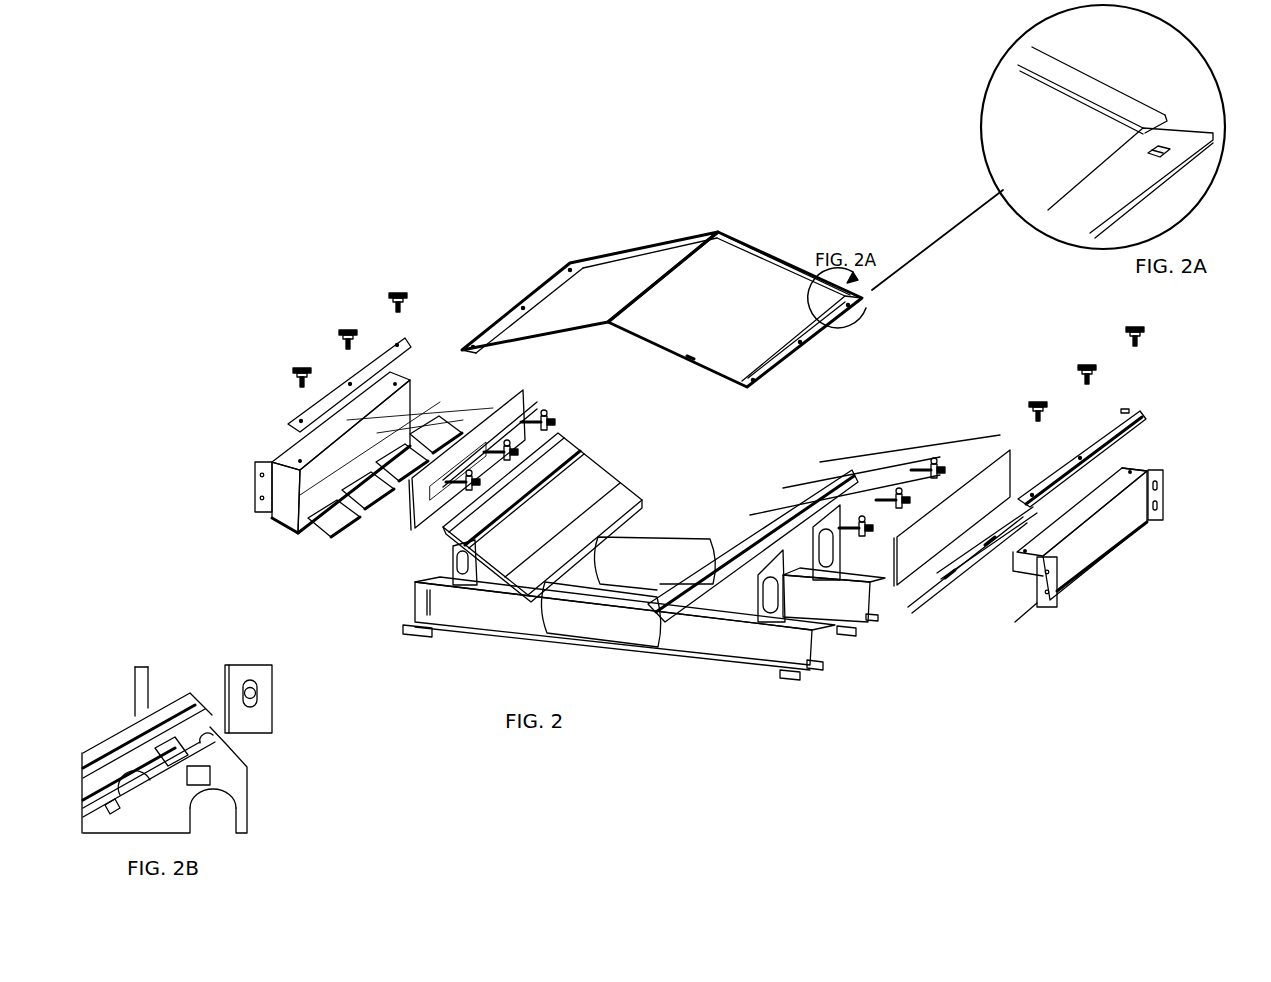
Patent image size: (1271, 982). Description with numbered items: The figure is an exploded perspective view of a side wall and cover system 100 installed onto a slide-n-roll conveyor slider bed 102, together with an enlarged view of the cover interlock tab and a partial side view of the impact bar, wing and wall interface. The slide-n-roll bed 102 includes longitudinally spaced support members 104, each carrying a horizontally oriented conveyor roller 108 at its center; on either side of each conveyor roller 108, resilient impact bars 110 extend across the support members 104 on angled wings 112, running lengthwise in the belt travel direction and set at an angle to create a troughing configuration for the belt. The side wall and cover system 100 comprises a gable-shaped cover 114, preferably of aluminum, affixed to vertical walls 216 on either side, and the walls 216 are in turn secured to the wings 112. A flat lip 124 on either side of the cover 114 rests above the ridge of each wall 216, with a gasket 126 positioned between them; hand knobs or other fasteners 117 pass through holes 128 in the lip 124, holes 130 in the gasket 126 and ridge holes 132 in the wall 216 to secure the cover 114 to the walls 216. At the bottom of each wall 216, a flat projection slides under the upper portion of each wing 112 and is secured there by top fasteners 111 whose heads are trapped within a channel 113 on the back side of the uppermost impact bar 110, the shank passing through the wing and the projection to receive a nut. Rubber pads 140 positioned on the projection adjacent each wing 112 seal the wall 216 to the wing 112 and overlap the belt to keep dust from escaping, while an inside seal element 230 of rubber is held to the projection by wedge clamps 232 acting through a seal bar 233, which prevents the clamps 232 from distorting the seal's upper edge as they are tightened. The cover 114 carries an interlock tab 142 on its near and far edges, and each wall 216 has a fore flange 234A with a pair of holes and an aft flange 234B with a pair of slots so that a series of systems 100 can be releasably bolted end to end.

In FIG. 2, the side wall and cover system 100 is at (878, 374).
In FIG. 2, the slide-n-roll conveyor slider bed 102 is at (848, 658).
In FIG. 2, the support members 104 is at (703, 660).
In FIG. 2, the conveyor roller 108 is at (587, 608).
In FIG. 2, the impact bars 110 is at (617, 500).
In FIG. 2B, the top bolts or fasteners 111 is at (210, 780).
In FIG. 2, the angled wings 112 is at (453, 563).
In FIG. 2B, the channel 113 is at (188, 728).
In FIG. 2, the cover 114 is at (557, 280).
In FIG. 2, the hand knobs or fasteners 117 is at (398, 298).
In FIG. 2, the flat lip 124 is at (777, 362).
In FIG. 2, the gasket 126 is at (387, 352).
In FIG. 2, the holes 128 is at (803, 340).
In FIG. 2, the holes 130 is at (1082, 452).
In FIG. 2, the ridge holes 132 is at (1123, 473).
In FIG. 2, the rubber pads 140 is at (418, 440).
In FIG. 2, the interlock tab 142 is at (760, 248).
In FIG. 2A, the interlock tab 142 is at (1105, 95).
In FIG. 2, the vertical walls 216 is at (282, 441).
In FIG. 2, the inside seal element 230 is at (525, 388).
In FIG. 2, the wedge clamps 232 is at (550, 415).
In FIG. 2, the seal bar 233 is at (537, 410).
In FIG. 2, the fore flange 234A is at (252, 498).
In FIG. 2, the aft flange 234B is at (1170, 478).